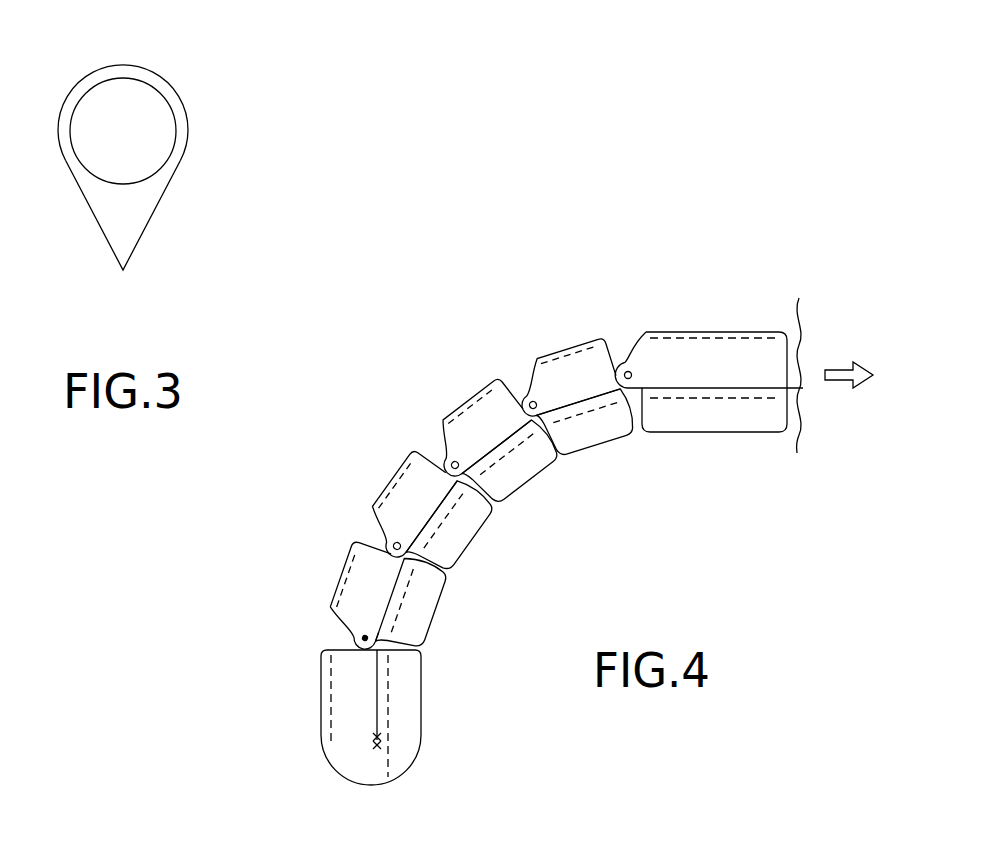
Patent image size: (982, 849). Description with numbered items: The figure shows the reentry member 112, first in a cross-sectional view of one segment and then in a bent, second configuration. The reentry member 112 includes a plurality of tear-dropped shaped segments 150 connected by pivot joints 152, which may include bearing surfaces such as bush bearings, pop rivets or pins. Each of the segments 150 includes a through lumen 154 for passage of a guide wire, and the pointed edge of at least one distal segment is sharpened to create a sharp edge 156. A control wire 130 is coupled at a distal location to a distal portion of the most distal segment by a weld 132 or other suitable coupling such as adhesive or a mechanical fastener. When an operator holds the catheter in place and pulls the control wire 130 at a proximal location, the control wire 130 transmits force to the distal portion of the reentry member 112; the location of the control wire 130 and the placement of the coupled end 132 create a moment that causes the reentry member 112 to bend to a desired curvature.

In FIG. 3, the reentry member 112 is at (178, 97).
In FIG. 4, the reentry member 112 is at (728, 310).
In FIG. 4, the control wire 130 is at (422, 607).
In FIG. 4, the weld 132 is at (380, 740).
In FIG. 4, the tear-dropped shaped segments 150 is at (356, 543).
In FIG. 4, the pivot joints 152 is at (362, 637).
In FIG. 3, the through lumen 154 is at (130, 90).
In FIG. 4, the through lumen 154 is at (329, 718).
In FIG. 3, the sharp edge 156 is at (124, 275).
In FIG. 4, the sharp edge 156 is at (415, 757).